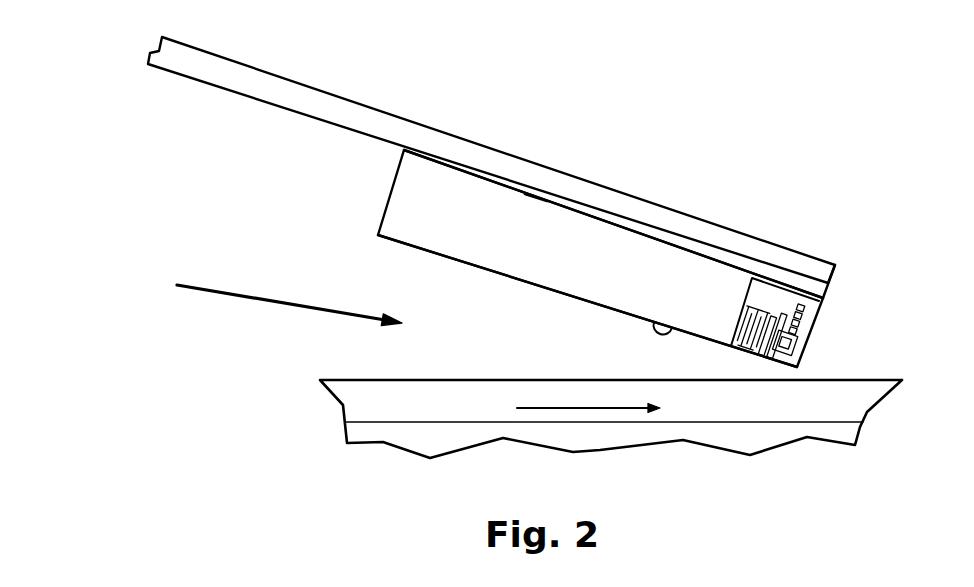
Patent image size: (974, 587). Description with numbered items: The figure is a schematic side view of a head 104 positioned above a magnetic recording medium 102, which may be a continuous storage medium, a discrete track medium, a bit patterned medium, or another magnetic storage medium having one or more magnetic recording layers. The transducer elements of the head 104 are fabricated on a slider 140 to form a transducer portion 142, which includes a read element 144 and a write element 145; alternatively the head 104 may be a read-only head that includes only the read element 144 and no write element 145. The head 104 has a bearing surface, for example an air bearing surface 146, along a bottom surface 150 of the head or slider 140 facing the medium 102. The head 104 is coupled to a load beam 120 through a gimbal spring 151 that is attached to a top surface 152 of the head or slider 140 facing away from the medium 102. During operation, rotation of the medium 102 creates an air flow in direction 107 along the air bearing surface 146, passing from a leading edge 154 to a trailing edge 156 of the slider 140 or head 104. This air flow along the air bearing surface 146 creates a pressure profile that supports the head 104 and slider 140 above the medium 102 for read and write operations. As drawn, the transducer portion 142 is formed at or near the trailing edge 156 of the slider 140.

The medium 102 is at (832, 408).
The head 104 is at (540, 202).
The air flow direction 107 is at (587, 403).
The load beam 120 is at (423, 138).
The slider 140 is at (629, 258).
The transducer portion 142 is at (832, 266).
The read element 144 is at (758, 298).
The write element 145 is at (812, 288).
The air bearing surface 146 is at (538, 295).
The bottom surface 150 is at (670, 325).
The gimbal spring 151 is at (540, 193).
The top surface 152 is at (667, 247).
The leading edge 154 is at (390, 193).
The trailing edge 156 is at (813, 325).